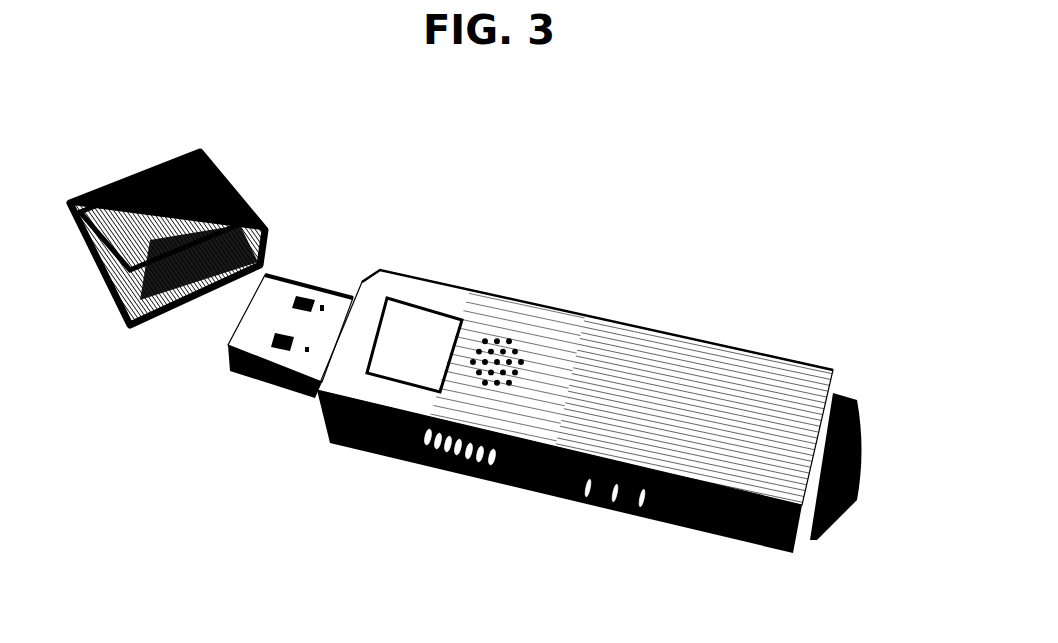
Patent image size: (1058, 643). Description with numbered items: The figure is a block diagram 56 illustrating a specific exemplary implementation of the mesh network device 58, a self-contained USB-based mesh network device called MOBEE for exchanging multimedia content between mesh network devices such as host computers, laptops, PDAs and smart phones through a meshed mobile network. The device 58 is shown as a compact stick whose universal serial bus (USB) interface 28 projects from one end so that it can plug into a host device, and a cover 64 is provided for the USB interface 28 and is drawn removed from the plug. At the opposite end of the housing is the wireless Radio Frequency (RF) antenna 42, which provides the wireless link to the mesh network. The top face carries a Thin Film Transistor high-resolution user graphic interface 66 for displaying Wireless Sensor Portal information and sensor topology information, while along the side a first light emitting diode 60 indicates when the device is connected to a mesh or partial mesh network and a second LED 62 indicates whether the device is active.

The block diagram 56 is at (715, 165).
The cover 64 is at (232, 207).
The universal serial bus (USB) interface 28 is at (290, 307).
The mesh network device 58 is at (568, 345).
The Thin Film Transistor (TFT) high-resolution user graphic interface (GUI) 66 is at (414, 345).
The first light emitting diode (LED) 60 is at (463, 462).
The second LED 62 is at (617, 497).
The wireless Radio Frequency (RF) antenna 42 is at (847, 480).